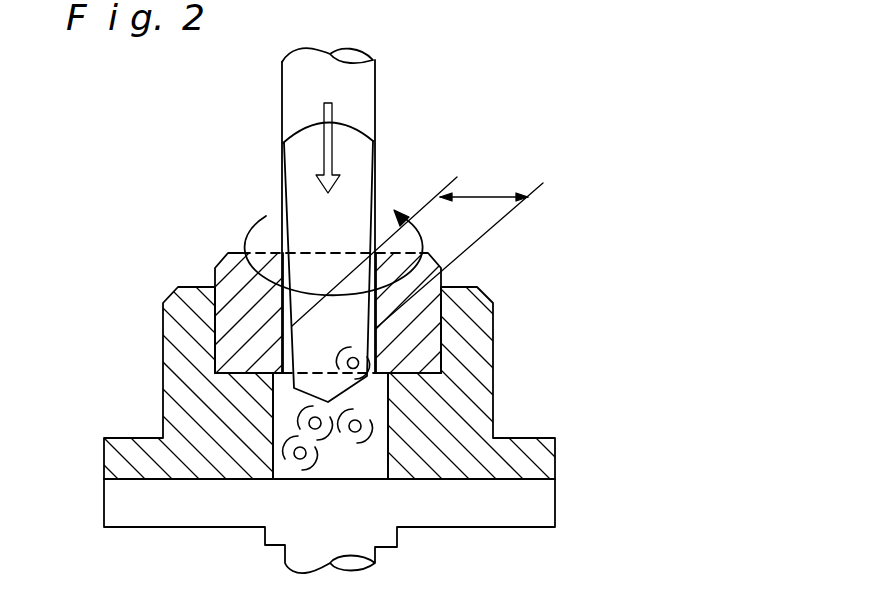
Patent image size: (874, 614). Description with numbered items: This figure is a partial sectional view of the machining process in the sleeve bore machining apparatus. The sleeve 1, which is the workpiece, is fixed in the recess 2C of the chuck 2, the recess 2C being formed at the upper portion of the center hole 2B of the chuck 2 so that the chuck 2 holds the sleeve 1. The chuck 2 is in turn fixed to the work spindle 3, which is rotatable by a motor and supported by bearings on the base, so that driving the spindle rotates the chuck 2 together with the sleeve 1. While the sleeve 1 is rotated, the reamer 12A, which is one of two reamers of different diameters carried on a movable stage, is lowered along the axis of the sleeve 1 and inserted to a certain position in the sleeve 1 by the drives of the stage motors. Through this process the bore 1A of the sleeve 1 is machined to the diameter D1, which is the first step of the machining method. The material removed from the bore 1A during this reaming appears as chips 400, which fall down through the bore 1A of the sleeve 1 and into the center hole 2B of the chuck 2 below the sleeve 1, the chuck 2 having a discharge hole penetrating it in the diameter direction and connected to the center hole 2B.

The sleeve 1 is at (230, 280).
The bore 1A is at (378, 349).
The chuck 2 is at (166, 391).
The center hole 2B is at (352, 463).
The recess 2C is at (213, 333).
The work spindle 3 is at (133, 506).
The reamer 12A is at (367, 79).
The chips 400 is at (342, 438).
The diameter D1 is at (417, 245).